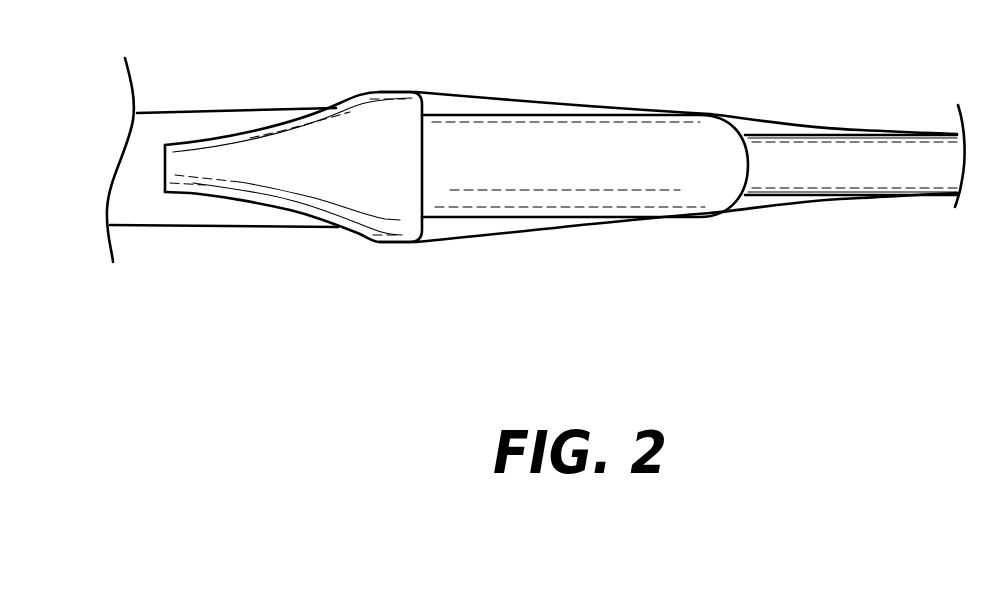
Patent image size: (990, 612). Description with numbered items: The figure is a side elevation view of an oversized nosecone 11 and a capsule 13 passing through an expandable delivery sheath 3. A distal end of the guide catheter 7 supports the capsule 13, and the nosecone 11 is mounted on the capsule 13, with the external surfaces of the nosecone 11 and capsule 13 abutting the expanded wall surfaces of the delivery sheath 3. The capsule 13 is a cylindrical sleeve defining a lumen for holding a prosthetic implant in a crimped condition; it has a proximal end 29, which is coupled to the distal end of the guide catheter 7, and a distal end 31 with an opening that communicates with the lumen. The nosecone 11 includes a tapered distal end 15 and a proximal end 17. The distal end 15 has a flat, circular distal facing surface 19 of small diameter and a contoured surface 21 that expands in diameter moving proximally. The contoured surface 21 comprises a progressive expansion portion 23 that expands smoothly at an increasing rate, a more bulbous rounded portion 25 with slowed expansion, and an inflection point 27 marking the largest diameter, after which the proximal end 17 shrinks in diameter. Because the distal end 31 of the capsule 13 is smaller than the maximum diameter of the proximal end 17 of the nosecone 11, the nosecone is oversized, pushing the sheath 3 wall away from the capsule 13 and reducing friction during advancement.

The delivery sheath 3 is at (199, 112).
The guide catheter 7 is at (905, 152).
The nosecone 11 is at (345, 135).
The capsule 13 is at (681, 128).
The tapered distal end 15 is at (250, 213).
The proximal end 17 is at (392, 258).
The distal facing surface 19 is at (153, 170).
The contoured surface 21 is at (268, 162).
The progressive expansion portion 23 is at (240, 183).
The rounded portion 25 is at (330, 212).
The inflection point 27 is at (390, 92).
The proximal end 29 is at (726, 230).
The distal end 31 is at (443, 258).